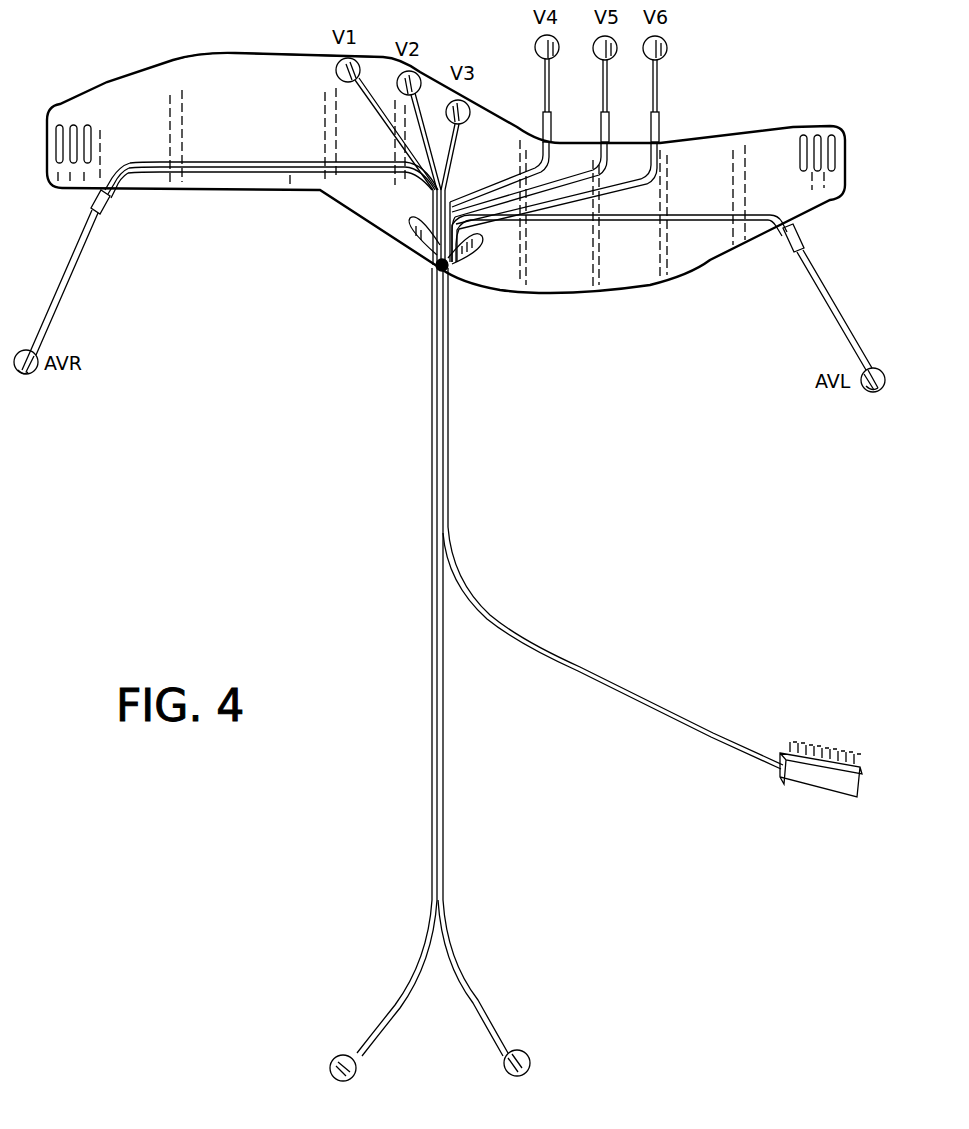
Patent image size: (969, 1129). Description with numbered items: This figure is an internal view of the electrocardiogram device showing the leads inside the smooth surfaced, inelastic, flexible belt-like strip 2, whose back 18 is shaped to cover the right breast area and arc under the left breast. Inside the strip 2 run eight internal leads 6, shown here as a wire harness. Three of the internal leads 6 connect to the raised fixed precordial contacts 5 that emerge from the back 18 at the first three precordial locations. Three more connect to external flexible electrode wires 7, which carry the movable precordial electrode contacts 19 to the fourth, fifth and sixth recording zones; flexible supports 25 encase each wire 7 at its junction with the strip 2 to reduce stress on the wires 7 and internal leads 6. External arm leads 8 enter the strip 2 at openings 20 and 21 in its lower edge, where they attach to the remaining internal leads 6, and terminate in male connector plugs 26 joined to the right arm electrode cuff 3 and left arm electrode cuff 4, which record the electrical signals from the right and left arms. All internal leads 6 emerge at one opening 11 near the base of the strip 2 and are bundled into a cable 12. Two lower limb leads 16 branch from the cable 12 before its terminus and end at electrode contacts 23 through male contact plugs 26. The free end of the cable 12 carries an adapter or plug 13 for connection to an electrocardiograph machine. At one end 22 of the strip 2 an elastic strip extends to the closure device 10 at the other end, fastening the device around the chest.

The belt-like strip 2 is at (640, 286).
The right arm electrode cuff 3 is at (34, 372).
The left arm electrode cuff 4 is at (874, 392).
The fixed precordial contacts 5 is at (336, 72).
The internal leads 6 is at (646, 178).
The external flexible electrode wires 7 is at (552, 88).
The external arm leads 8 is at (70, 286).
The closure device 10 is at (74, 124).
The opening 11 is at (448, 272).
The cable 12 is at (430, 360).
The adapter or plug 13 is at (818, 780).
The lower limb leads 16 is at (431, 720).
The back 18 is at (228, 126).
The movable precordial electrode contacts 19 is at (535, 46).
The opening 20 is at (110, 196).
The opening 21 is at (782, 240).
The end of the belt-like strip 22 is at (820, 134).
The electrode contacts 23 is at (328, 1066).
The flexible supports 25 is at (542, 126).
The male connector plugs 26 is at (16, 374).